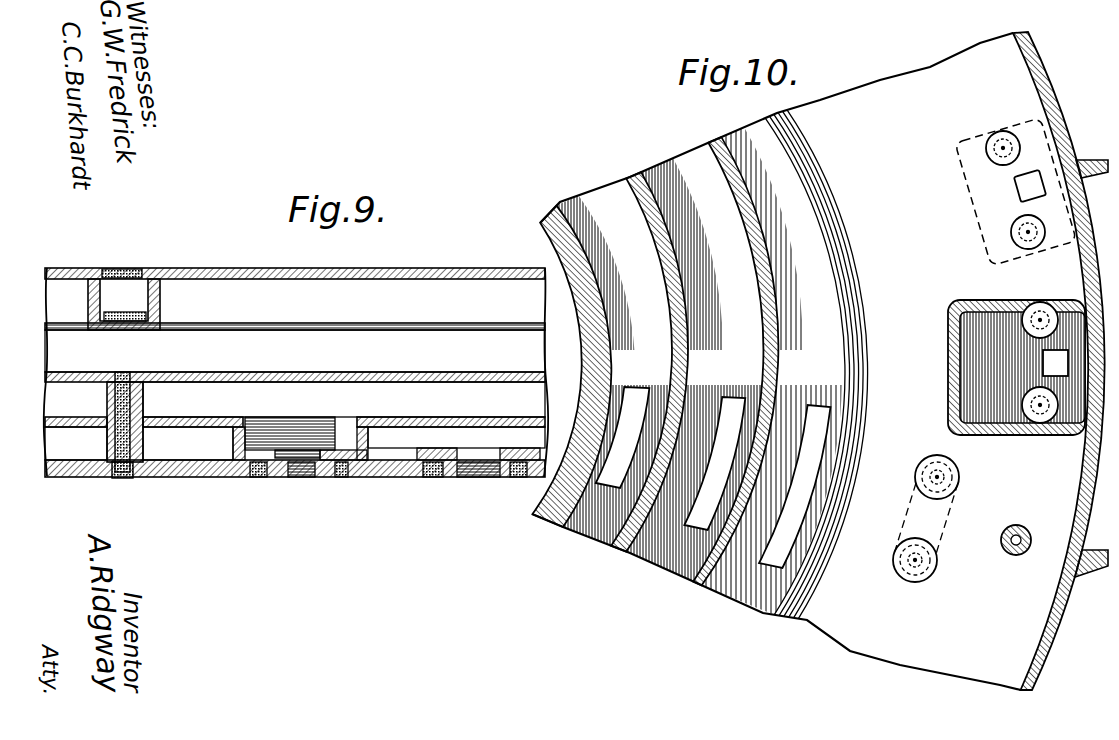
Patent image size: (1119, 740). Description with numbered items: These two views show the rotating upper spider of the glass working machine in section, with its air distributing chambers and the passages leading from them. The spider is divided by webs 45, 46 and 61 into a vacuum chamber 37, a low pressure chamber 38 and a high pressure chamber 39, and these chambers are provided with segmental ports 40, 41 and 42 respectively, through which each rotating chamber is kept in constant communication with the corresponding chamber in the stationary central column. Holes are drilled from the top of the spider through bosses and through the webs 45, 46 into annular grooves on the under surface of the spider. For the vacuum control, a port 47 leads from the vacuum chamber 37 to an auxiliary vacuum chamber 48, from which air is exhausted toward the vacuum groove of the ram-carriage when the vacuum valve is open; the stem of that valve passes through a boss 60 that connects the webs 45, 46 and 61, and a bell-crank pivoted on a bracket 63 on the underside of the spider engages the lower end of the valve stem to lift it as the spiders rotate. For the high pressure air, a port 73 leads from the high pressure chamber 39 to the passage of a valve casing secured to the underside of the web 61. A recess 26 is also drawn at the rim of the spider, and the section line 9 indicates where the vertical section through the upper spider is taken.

In FIG. 9, the section line 9 is at (394, 272).
In FIG. 10, the section line 9 is at (1065, 361).
In FIG. 10, the recess 26 is at (1072, 415).
In FIG. 9, the vacuum chamber 37 is at (295, 351).
In FIG. 10, the vacuum chamber 37 is at (597, 366).
In FIG. 9, the low pressure chamber 38 is at (344, 399).
In FIG. 10, the low pressure chamber 38 is at (694, 362).
In FIG. 9, the high pressure chamber 39 is at (456, 442).
In FIG. 10, the high pressure chamber 39 is at (841, 364).
In FIG. 10, the segmental port 40 is at (610, 490).
In FIG. 10, the segmental port 41 is at (700, 528).
In FIG. 10, the segmental port 42 is at (800, 553).
In FIG. 9, the web 45 is at (93, 377).
In FIG. 10, the web 45 is at (688, 300).
In FIG. 9, the web 46 is at (82, 425).
In FIG. 10, the web 46 is at (775, 292).
In FIG. 9, the port 47 is at (124, 304).
In FIG. 9, the auxiliary vacuum chamber 48 is at (140, 290).
In FIG. 9, the boss 60 is at (150, 452).
In FIG. 10, the boss 60 is at (1024, 535).
In FIG. 9, the web 61 is at (76, 470).
In FIG. 10, the bracket 63 is at (946, 521).
In FIG. 10, the port 73 is at (1030, 180).